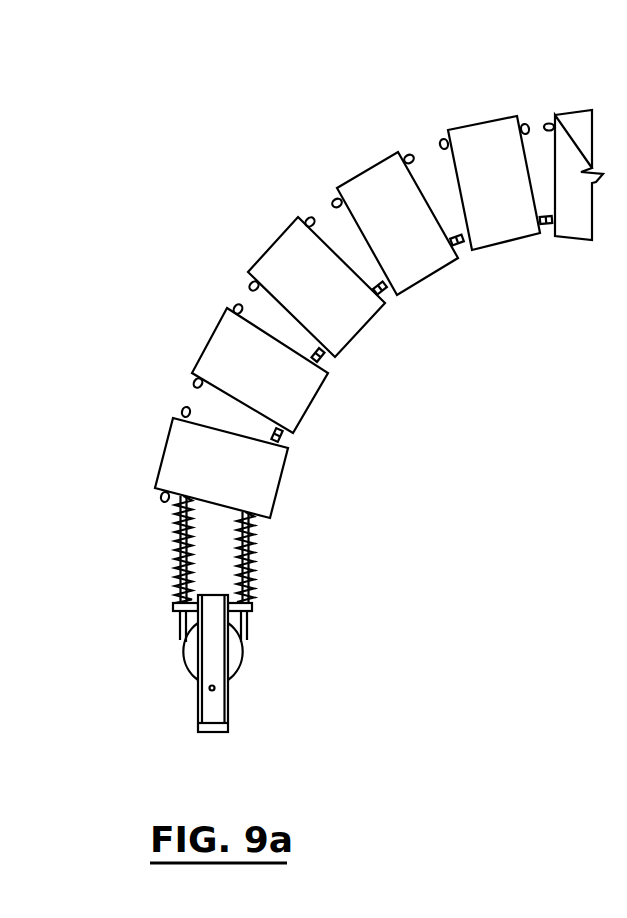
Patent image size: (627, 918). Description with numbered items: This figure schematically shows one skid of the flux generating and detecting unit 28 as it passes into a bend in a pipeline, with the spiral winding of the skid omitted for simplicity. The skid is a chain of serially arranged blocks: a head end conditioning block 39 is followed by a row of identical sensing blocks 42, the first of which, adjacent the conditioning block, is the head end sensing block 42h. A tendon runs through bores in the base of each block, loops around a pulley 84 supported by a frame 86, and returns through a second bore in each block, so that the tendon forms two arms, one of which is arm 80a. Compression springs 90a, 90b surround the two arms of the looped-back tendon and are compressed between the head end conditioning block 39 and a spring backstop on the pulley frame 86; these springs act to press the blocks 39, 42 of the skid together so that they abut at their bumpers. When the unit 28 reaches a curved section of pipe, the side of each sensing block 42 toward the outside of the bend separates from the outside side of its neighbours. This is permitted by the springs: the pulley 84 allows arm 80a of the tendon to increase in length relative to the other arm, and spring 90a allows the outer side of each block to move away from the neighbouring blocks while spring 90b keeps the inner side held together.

The flux generating and detecting unit 28 is at (216, 162).
The sensing block 42 is at (377, 166).
The sensing block at the head end 42h is at (203, 347).
The head end conditioning block 39 is at (165, 448).
The compression spring 90a is at (177, 515).
The arm of the tendon 80a is at (177, 563).
The compression spring 90b is at (253, 548).
The pulley 84 is at (240, 658).
The frame 86 is at (210, 732).